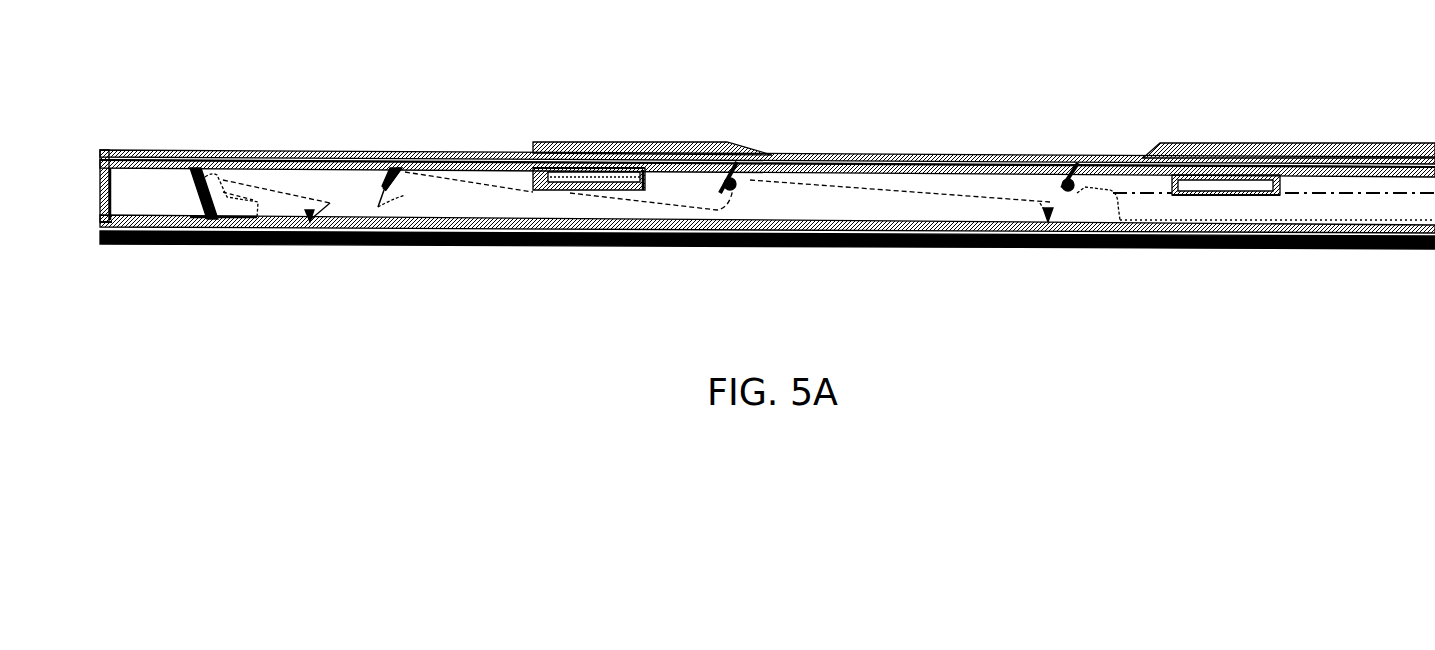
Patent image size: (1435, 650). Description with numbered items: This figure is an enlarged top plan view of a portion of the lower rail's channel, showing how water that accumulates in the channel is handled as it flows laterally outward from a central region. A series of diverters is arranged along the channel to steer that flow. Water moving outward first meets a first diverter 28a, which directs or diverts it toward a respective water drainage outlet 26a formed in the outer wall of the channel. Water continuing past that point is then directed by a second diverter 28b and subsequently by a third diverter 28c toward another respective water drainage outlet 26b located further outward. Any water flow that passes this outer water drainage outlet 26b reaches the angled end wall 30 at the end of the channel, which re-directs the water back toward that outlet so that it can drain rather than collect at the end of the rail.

The water drainage outlet 26a is at (1020, 235).
The water drainage outlet 26b is at (277, 227).
The first diverter 28a is at (1067, 182).
The second diverter 28b is at (733, 178).
The third diverter 28c is at (387, 177).
The angled end wall 30 is at (202, 198).